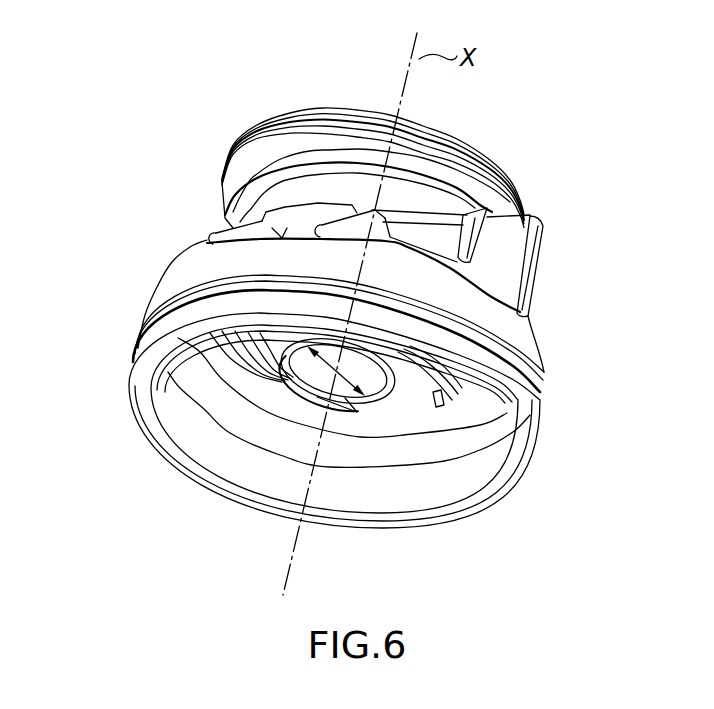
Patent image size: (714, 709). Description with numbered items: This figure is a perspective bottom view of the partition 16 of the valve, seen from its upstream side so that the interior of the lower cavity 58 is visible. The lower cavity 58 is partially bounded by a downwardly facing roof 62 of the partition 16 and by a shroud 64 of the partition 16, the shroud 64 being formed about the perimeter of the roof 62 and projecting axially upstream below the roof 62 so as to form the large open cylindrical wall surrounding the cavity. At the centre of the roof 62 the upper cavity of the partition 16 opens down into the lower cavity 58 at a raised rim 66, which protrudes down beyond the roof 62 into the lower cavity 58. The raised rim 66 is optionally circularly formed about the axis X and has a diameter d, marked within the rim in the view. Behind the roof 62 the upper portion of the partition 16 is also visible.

The partition 16 is at (140, 171).
The lower cavity 58 is at (262, 458).
The roof 62 is at (233, 360).
The shroud 64 is at (192, 315).
The raised rim 66 is at (372, 390).